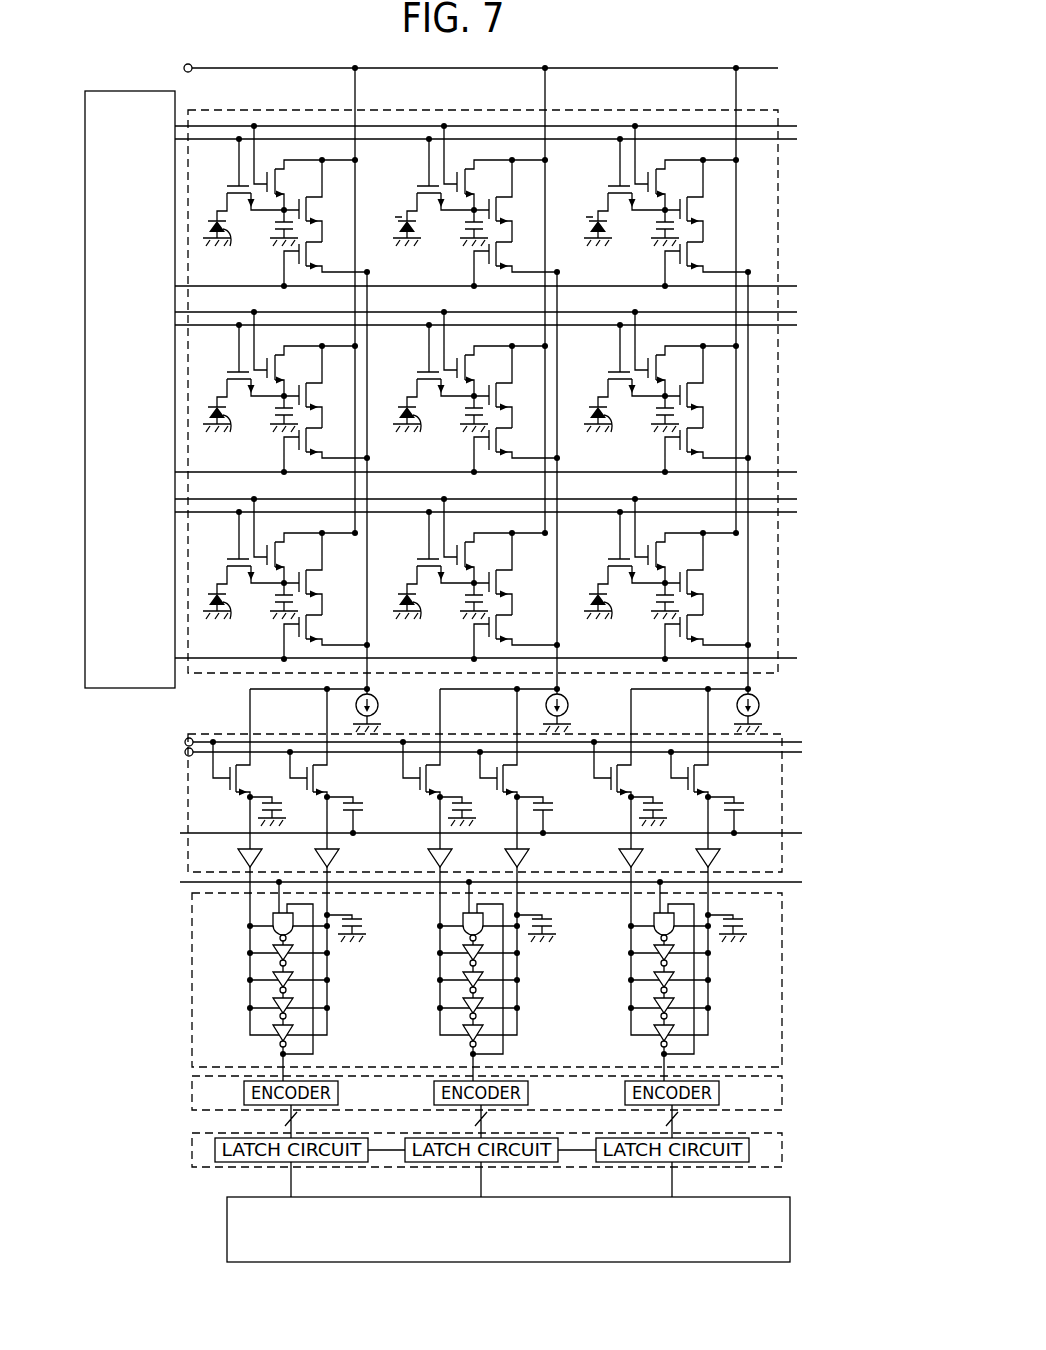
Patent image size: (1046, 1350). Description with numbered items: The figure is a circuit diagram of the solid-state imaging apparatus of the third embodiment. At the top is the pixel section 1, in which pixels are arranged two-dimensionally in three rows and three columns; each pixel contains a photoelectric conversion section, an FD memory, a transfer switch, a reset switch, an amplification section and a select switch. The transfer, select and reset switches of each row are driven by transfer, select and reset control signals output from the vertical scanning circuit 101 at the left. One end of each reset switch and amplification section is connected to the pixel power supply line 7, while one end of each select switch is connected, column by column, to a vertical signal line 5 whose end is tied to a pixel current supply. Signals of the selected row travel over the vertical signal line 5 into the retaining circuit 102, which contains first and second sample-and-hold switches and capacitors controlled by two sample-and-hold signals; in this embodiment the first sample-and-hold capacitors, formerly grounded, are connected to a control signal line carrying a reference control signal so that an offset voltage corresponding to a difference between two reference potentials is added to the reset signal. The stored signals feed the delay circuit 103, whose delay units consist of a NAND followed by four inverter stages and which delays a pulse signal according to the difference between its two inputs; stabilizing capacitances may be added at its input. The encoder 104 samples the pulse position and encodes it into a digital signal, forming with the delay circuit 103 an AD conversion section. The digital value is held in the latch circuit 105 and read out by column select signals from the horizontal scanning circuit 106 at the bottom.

The pixel section 1 is at (778, 172).
The vertical signal line 5 is at (374, 274).
The pixel power supply line 7 is at (778, 68).
The vertical scanning circuit 101 is at (138, 91).
The retaining circuit 102 is at (782, 857).
The delay circuit 103 is at (782, 990).
The encoder 104 is at (782, 1096).
The latch circuit 105 is at (782, 1165).
The horizontal scanning circuit 106 is at (227, 1234).